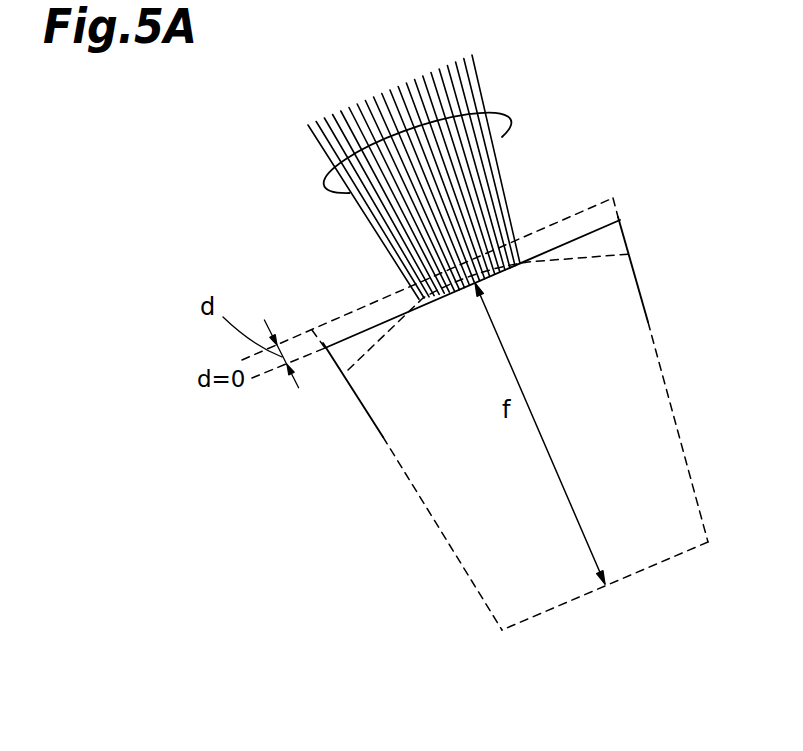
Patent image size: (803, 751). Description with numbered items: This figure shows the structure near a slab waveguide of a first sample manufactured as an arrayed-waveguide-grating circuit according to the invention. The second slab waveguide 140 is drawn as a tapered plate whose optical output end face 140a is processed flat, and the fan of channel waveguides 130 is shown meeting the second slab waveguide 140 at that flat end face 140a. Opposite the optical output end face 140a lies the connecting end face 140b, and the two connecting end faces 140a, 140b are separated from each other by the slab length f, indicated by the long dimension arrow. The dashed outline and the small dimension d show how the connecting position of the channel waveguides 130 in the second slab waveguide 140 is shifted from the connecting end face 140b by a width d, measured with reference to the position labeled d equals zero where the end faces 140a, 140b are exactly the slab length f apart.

The channel waveguides 130 is at (328, 174).
The second slab waveguide 140 is at (630, 278).
The optical output end face 140a is at (616, 222).
The connecting end face 140b is at (538, 617).